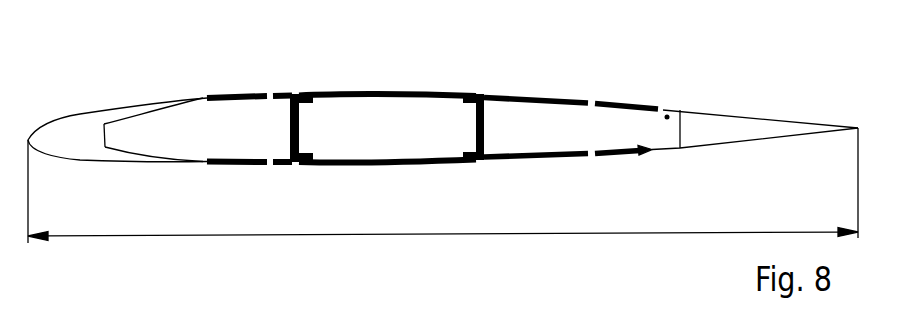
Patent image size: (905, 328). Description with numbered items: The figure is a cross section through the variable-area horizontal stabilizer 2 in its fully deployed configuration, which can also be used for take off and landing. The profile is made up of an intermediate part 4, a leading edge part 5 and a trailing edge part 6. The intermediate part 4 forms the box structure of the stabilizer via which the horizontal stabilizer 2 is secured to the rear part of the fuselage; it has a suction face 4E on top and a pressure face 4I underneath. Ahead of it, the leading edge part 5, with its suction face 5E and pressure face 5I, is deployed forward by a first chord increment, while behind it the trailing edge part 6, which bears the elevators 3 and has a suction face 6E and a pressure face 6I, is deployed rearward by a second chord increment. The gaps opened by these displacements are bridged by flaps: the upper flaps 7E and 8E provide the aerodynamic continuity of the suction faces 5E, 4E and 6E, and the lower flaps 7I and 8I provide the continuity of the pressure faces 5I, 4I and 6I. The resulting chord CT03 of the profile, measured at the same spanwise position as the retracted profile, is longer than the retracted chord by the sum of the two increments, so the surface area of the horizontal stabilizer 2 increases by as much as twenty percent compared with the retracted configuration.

The horizontal stabilizer 2 is at (309, 72).
The elevators 3 is at (737, 127).
The intermediate part 4 is at (400, 106).
The suction face 4E is at (355, 94).
The pressure face 4I is at (366, 165).
The leading edge part 5 is at (77, 128).
The suction face 5E is at (155, 100).
The pressure face 5I is at (138, 163).
The trailing edge part 6 is at (713, 88).
The suction face 6E is at (672, 108).
The pressure face 6I is at (663, 152).
The flap 7E is at (233, 95).
The flap 7I is at (233, 163).
The flap 8E is at (607, 100).
The flap 8I is at (609, 156).
The chord CT03 is at (443, 185).